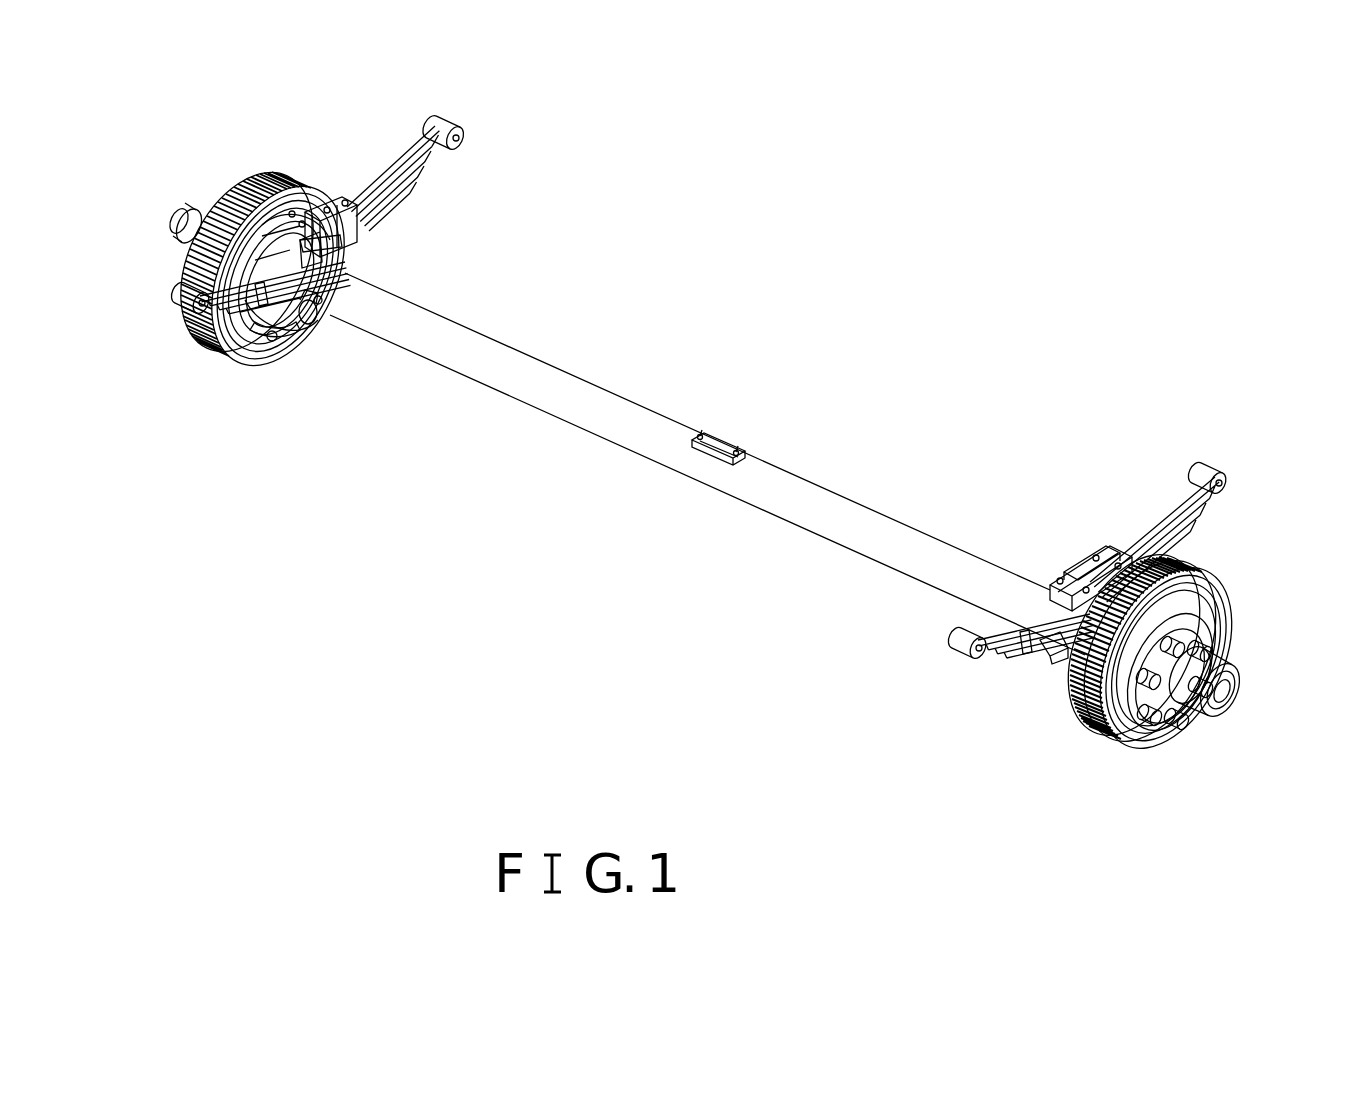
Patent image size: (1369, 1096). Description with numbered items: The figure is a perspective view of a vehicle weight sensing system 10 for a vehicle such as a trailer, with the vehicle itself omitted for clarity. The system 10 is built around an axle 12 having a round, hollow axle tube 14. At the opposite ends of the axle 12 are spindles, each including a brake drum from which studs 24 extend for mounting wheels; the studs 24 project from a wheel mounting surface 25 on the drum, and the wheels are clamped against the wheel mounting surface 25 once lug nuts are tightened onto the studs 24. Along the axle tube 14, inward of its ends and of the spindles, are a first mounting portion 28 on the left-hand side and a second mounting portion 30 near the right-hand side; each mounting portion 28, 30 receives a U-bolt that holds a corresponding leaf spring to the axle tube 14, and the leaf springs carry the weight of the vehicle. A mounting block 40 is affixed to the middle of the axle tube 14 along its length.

The vehicle weight sensing system 10 is at (808, 303).
The axle 12 is at (990, 524).
The axle tube 14 is at (846, 512).
The stud 24 is at (1225, 650).
The wheel mounting surface 25 is at (1153, 705).
The first mounting portion 28 is at (318, 310).
The second mounting portion 30 is at (1070, 656).
The mounting block 40 is at (718, 465).